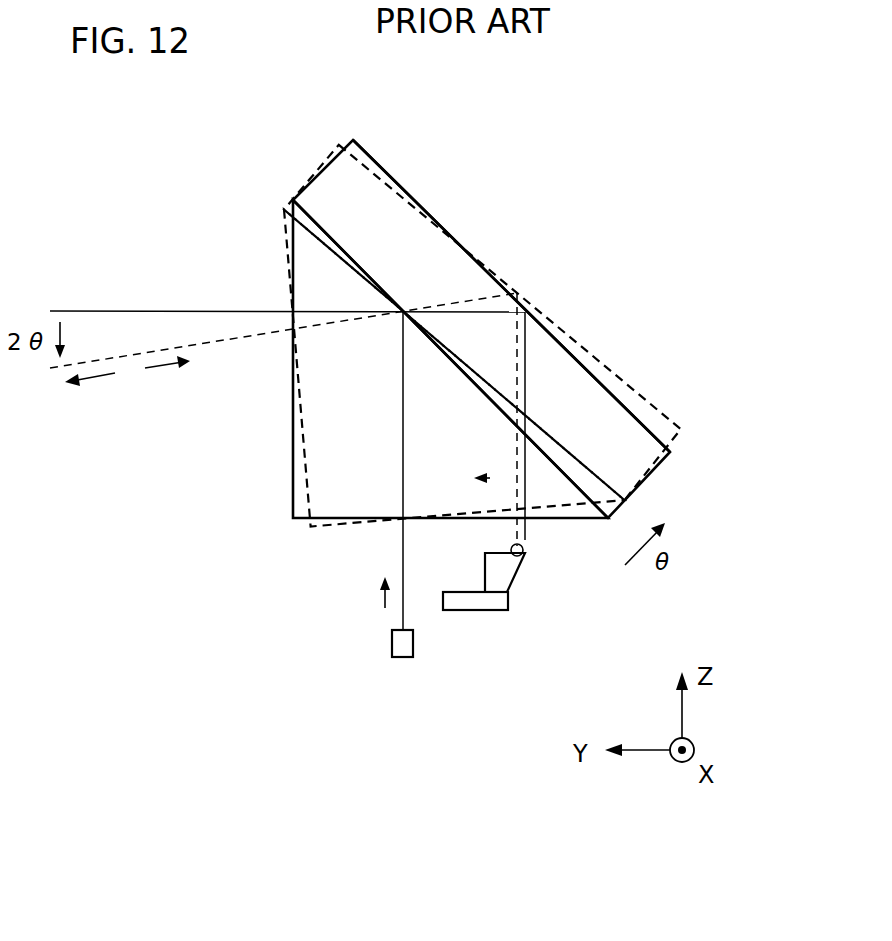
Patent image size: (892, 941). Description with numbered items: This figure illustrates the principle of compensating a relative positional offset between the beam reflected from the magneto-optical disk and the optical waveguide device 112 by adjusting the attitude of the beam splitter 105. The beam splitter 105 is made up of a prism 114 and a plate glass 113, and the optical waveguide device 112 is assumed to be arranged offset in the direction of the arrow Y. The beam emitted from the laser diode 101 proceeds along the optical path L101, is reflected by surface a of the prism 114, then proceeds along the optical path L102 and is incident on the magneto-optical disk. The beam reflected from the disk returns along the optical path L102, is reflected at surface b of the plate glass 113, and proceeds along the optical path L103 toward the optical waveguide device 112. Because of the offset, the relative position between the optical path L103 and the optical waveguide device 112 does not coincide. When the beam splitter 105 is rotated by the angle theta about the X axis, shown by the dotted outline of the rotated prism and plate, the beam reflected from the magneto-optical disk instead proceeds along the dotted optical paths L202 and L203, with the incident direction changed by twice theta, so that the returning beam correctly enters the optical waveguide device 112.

The laser diode 101 is at (402, 650).
The beam splitter 105 is at (408, 232).
The optical waveguide device 112 is at (497, 602).
The plate glass 113 is at (380, 205).
The prism 114 is at (343, 448).
The optical path L101 is at (402, 542).
The optical path L102 is at (133, 310).
The optical path L103 is at (528, 355).
The optical path L202 is at (220, 342).
The optical path L203 is at (525, 390).